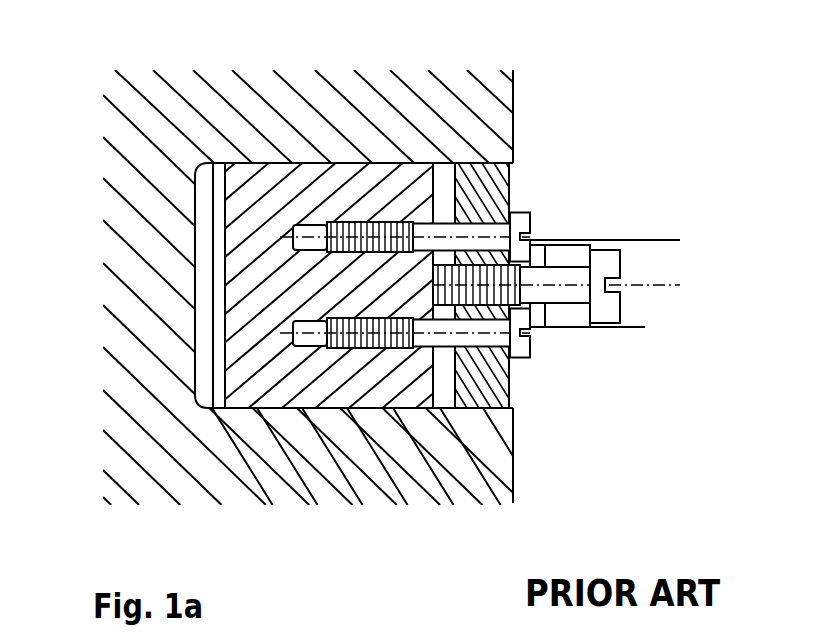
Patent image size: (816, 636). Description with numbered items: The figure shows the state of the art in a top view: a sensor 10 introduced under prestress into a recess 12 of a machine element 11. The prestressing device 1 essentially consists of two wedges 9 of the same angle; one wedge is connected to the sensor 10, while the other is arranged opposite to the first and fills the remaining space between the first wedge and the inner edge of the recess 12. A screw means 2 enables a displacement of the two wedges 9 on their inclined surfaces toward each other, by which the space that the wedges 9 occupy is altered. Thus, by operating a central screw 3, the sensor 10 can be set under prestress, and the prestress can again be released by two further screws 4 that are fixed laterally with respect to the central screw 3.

The prestressing device 1 is at (750, 522).
The screw means 2 is at (480, 285).
The central screw 3 is at (607, 267).
The further screws 4 is at (518, 222).
The wedges 9 is at (475, 222).
The sensor 10 is at (203, 367).
The machine element 11 is at (272, 112).
The recess 12 is at (97, 165).